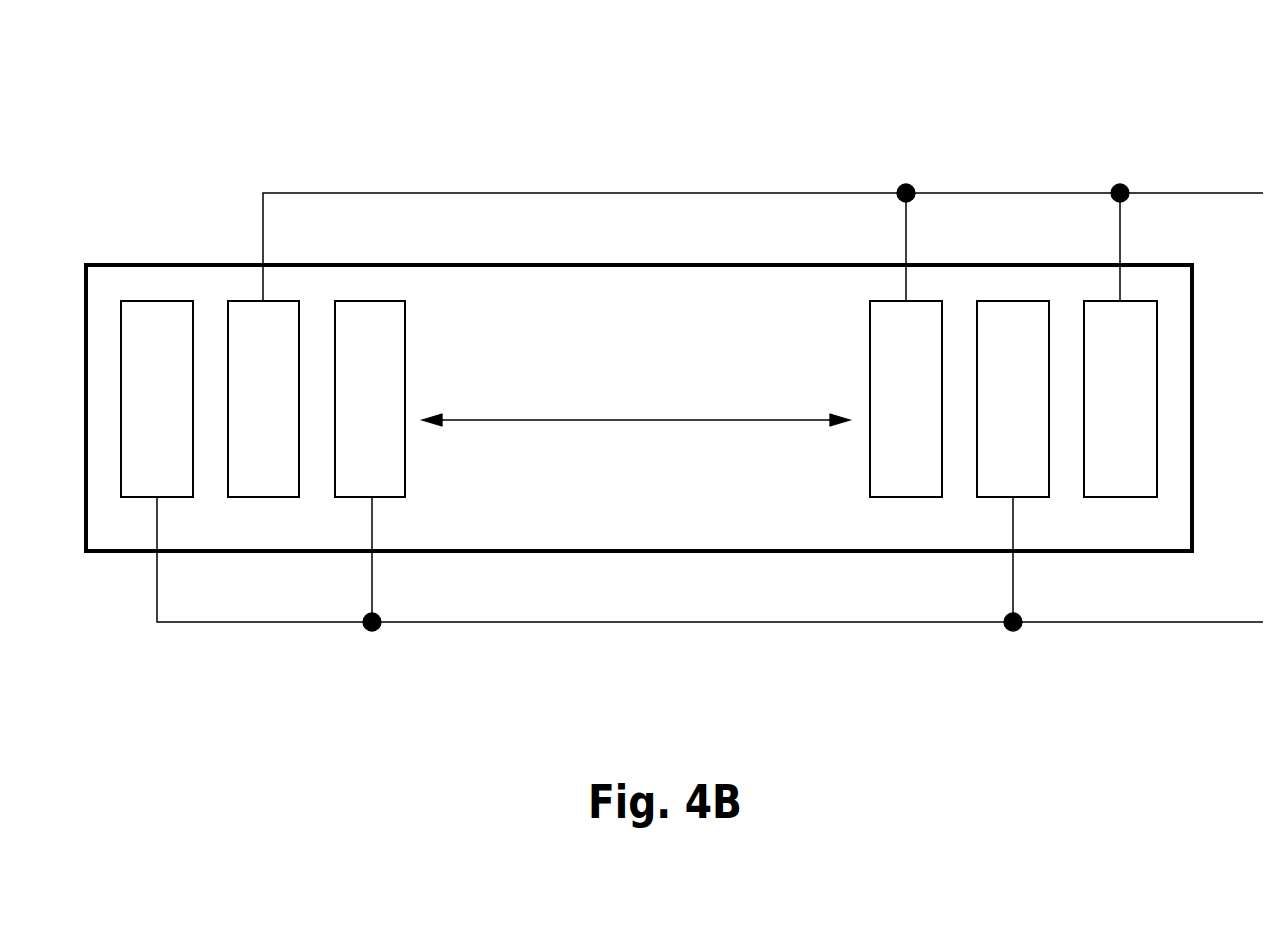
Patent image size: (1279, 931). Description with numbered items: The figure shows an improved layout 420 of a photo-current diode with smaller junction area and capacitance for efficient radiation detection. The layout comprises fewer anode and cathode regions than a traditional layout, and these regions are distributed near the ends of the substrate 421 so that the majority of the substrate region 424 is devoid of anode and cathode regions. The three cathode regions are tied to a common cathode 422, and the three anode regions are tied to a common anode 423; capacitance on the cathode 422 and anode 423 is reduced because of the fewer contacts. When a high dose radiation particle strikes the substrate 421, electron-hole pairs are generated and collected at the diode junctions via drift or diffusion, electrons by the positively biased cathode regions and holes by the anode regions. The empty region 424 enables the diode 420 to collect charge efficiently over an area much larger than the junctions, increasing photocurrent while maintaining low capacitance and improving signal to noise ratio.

The improved layout 420 is at (598, 48).
The substrate 421 is at (175, 265).
The cathode 422 is at (317, 192).
The anode 423 is at (245, 622).
The substrate region 424 is at (667, 420).